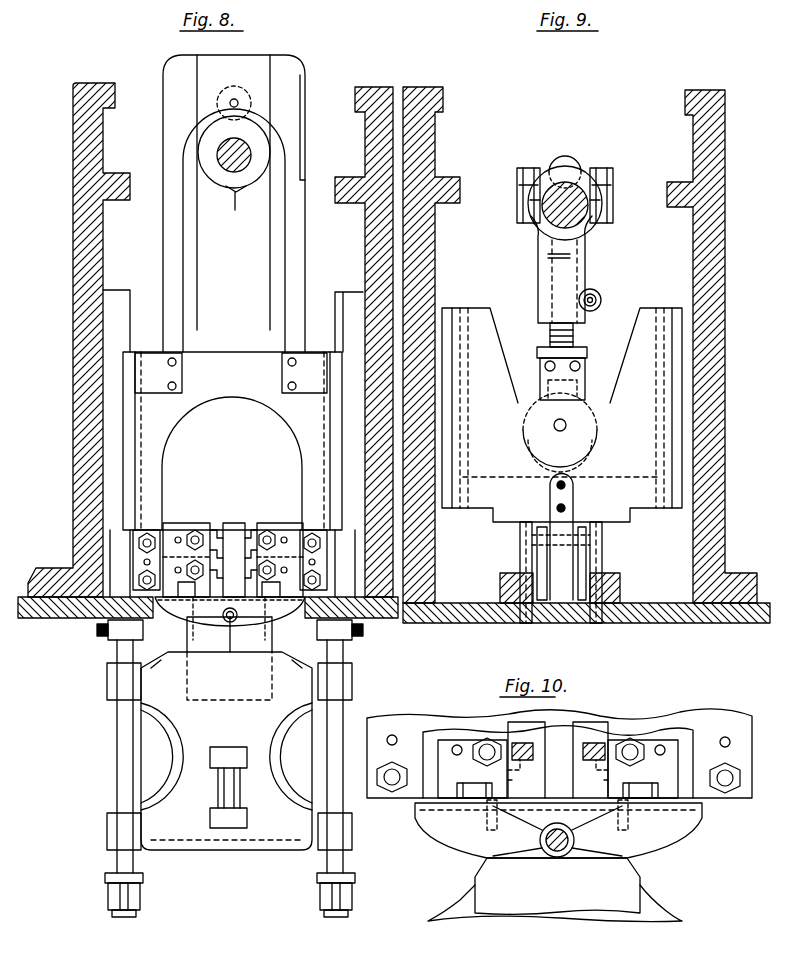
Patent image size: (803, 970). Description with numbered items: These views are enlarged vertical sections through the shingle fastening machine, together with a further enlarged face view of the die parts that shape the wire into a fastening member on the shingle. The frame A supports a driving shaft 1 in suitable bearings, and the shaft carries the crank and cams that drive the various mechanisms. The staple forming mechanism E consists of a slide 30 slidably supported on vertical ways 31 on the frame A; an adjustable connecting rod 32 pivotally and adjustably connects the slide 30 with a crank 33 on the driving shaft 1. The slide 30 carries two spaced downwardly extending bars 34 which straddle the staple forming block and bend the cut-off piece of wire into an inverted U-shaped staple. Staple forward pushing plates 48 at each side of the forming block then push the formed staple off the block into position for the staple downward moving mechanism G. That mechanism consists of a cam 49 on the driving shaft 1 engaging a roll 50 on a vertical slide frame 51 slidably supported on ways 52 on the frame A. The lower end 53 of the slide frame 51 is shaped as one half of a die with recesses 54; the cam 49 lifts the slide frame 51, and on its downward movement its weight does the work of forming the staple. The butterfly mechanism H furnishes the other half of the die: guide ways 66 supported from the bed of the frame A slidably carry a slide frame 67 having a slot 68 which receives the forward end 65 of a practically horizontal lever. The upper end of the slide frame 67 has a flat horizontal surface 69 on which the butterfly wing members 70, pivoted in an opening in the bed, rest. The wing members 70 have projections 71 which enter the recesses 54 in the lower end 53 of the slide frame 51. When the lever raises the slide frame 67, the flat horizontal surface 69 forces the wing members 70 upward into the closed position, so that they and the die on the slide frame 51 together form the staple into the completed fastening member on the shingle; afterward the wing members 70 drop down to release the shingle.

In FIG. 8, the frame A is at (73, 248).
In FIG. 9, the frame A is at (725, 246).
In FIG. 8, the staple downward moving mechanism G is at (178, 265).
In FIG. 10, the staple downward moving mechanism G is at (458, 718).
In FIG. 8, the butterfly mechanism H is at (230, 843).
In FIG. 10, the butterfly mechanism H is at (455, 848).
In FIG. 9, the staple forming mechanism E is at (488, 335).
In FIG. 8, the driving shaft 1 is at (246, 162).
In FIG. 9, the driving shaft 1 is at (575, 157).
In FIG. 9, the slide 30 is at (560, 496).
In FIG. 9, the vertical ways 31 is at (437, 422).
In FIG. 9, the adjustable connecting rod 32 is at (585, 270).
In FIG. 9, the crank 33 is at (555, 188).
In FIG. 9, the downwardly extending bars 34 is at (520, 541).
In FIG. 9, the staple forward pushing plate 48 is at (540, 562).
In FIG. 8, the cam 49 is at (235, 216).
In FIG. 8, the roll 50 is at (258, 117).
In FIG. 8, the vertical slide frame 51 is at (285, 299).
In FIG. 10, the vertical slide frame 51 is at (392, 722).
In FIG. 8, the ways 52 is at (130, 292).
In FIG. 8, the lower end of the slide frame 53 is at (252, 527).
In FIG. 10, the lower end of the slide frame 53 is at (652, 742).
In FIG. 10, the recesses 54 is at (470, 790).
In FIG. 8, the forward end of the lever 65 is at (232, 783).
In FIG. 8, the guide ways 66 is at (118, 762).
In FIG. 8, the slide frame 67 is at (226, 829).
In FIG. 8, the slot 68 is at (212, 793).
In FIG. 8, the flat horizontal surface 69 is at (229, 658).
In FIG. 10, the flat horizontal surface 69 is at (540, 858).
In FIG. 8, the butterfly wing members 70 is at (178, 615).
In FIG. 10, the butterfly wing members 70 is at (428, 820).
In FIG. 10, the projections 71 is at (473, 792).